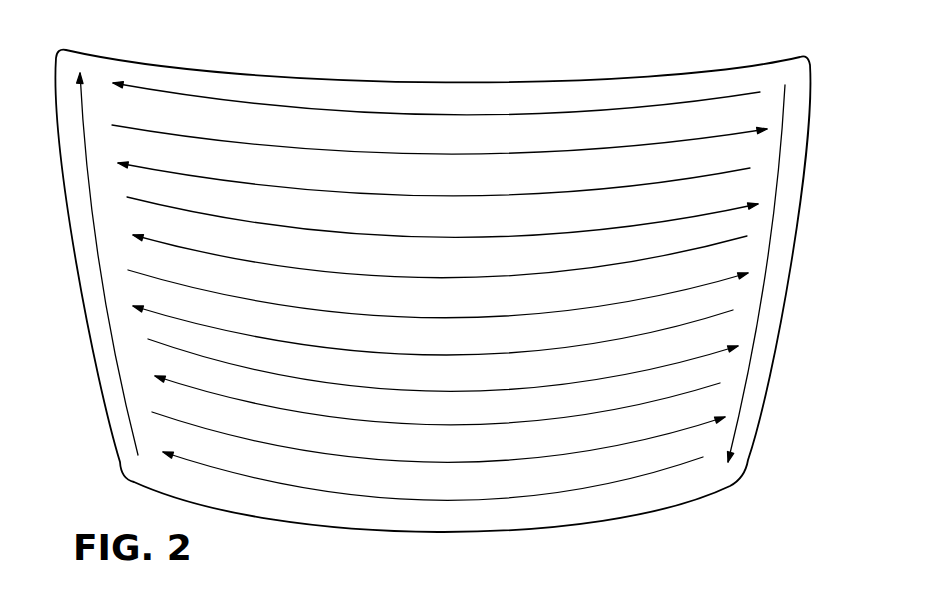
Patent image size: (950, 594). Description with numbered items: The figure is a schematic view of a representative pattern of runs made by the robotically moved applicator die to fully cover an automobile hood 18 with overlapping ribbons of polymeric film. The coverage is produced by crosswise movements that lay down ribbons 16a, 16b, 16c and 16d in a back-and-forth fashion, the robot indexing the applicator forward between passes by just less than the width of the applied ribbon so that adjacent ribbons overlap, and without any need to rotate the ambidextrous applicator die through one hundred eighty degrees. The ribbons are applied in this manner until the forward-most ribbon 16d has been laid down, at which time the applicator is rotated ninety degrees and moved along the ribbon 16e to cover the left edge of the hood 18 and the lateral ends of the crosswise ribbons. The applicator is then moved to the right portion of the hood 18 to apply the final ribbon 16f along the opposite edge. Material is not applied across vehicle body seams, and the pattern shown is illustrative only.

The hood 18 is at (790, 221).
The ribbon 16a is at (403, 113).
The ribbon 16b is at (526, 152).
The ribbon 16c is at (222, 177).
The forward-most ribbon 16d is at (410, 500).
The ribbon 16e is at (126, 404).
The final ribbon 16f is at (748, 383).